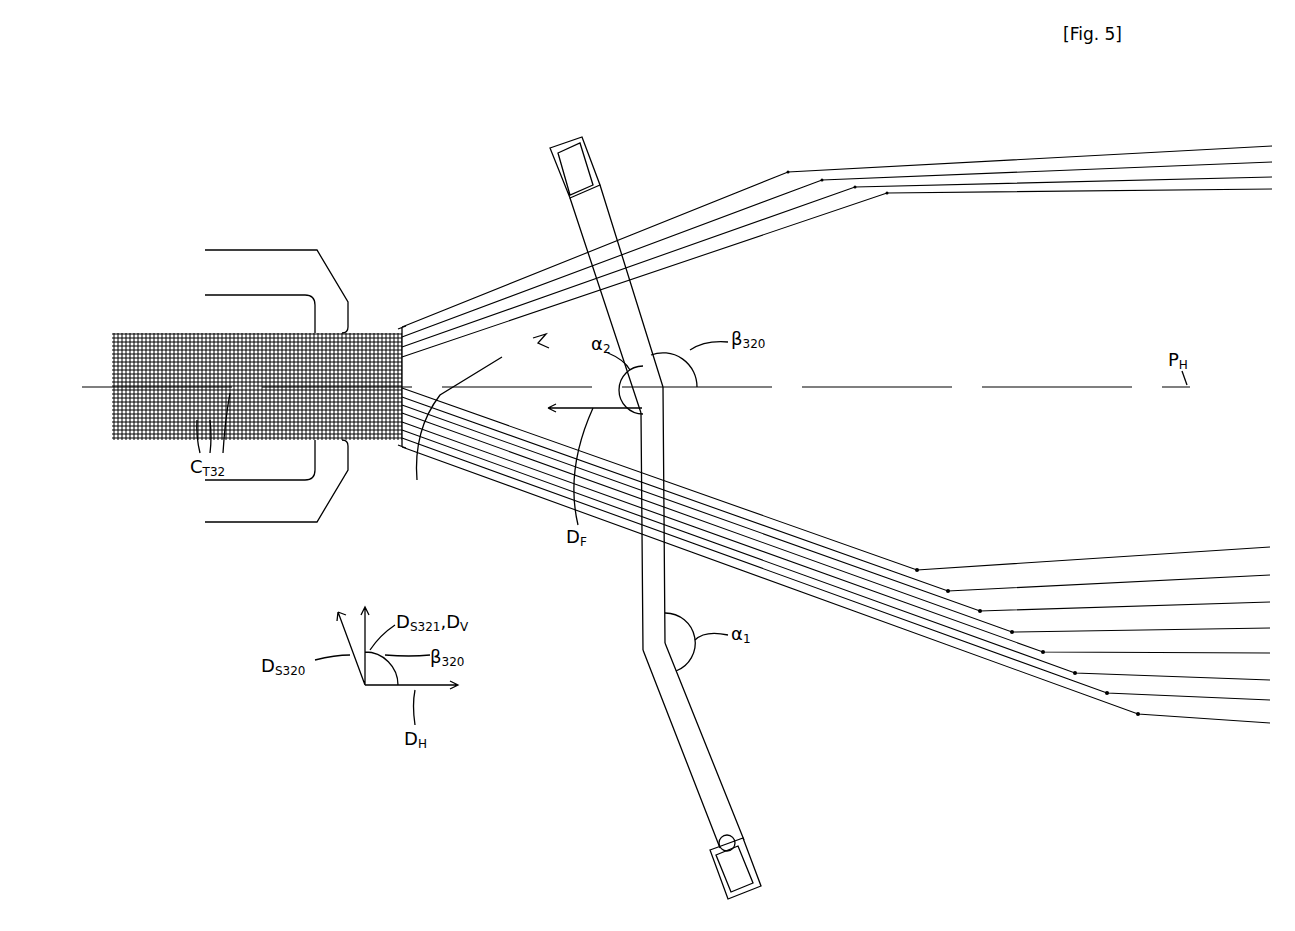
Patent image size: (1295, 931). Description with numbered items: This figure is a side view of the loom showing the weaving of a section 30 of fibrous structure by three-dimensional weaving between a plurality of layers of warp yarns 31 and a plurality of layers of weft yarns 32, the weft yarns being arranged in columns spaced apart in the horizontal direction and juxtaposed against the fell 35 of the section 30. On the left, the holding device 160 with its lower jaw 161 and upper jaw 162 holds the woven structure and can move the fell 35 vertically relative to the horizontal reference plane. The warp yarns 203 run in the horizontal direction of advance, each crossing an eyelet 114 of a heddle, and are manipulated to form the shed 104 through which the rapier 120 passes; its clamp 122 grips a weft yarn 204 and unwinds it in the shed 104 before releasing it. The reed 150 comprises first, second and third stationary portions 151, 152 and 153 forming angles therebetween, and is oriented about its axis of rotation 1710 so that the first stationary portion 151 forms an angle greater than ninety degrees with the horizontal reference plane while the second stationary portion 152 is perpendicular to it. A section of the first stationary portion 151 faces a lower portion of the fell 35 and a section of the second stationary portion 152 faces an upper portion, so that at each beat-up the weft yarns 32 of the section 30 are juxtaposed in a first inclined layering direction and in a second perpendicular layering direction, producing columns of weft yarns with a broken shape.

The section of fibrous structure 30 is at (170, 313).
The layers of warp yarns 31 is at (110, 428).
The weft yarns 32 is at (158, 417).
The fell 35 is at (423, 388).
The shed 104 is at (417, 480).
The eyelet 114 is at (887, 193).
The rapier 120 is at (527, 327).
The clamp 122 is at (540, 338).
The reed 150 is at (691, 506).
The first stationary portion 151 is at (710, 787).
The second stationary portion 152 is at (655, 447).
The third stationary portion 153 is at (628, 313).
The holding device 160 is at (276, 365).
The lower jaw 161 is at (262, 508).
The upper jaw 162 is at (253, 258).
The warp yarn 203 is at (1077, 163).
The weft yarn 204 is at (540, 343).
The axis of rotation or ball joint 1710 is at (740, 838).